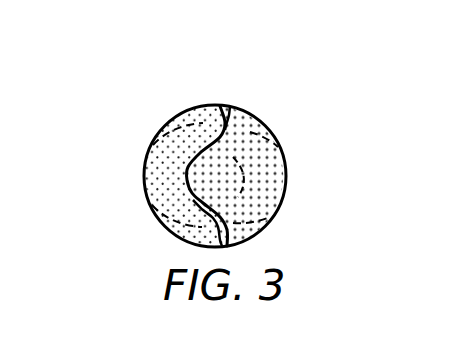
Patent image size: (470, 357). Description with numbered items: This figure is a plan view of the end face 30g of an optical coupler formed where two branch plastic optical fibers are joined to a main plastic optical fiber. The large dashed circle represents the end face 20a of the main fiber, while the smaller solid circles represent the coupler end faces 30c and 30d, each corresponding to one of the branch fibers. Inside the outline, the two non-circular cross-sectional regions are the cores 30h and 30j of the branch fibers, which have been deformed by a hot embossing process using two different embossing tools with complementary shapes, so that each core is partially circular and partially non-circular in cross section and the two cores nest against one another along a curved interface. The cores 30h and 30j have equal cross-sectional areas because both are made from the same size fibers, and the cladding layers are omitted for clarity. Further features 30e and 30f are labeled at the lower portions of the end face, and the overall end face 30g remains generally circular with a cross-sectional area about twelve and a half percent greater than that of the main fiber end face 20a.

The end face of the coupler 30g is at (345, 74).
The end face of the main POF 20a is at (230, 107).
The end face of the coupler 30d is at (190, 123).
The end face of the coupler 30c is at (250, 113).
The core of branch POF 30h is at (150, 140).
The core of branch POF 30j is at (278, 138).
The lower left portion 30f is at (157, 213).
The lower right portion 30e is at (277, 216).